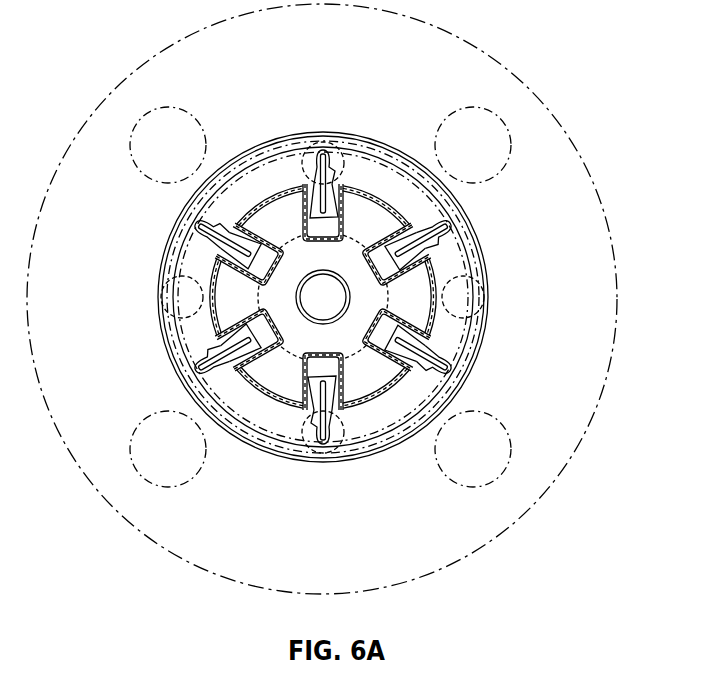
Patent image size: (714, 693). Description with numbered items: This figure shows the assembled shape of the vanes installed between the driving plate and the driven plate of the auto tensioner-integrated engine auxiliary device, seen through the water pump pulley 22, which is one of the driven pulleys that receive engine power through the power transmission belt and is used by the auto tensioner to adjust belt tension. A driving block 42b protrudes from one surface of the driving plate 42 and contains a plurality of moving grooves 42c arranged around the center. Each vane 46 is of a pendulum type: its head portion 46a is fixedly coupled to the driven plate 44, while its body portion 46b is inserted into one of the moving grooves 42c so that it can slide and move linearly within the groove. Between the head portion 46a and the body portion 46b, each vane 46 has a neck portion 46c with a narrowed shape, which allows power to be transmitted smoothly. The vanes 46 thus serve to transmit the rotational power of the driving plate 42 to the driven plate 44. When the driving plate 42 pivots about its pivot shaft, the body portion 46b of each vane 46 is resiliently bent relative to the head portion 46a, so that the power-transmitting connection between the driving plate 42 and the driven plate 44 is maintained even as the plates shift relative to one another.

The water pump pulley 22 is at (558, 115).
The driven plate 44 is at (358, 140).
The driving plate 42 is at (381, 297).
The driving block 42b is at (434, 290).
The moving groove 42c is at (424, 347).
The vane 46 is at (273, 257).
The head portion 46a is at (210, 217).
The body portion 46b is at (233, 267).
The neck portion 46c is at (213, 245).